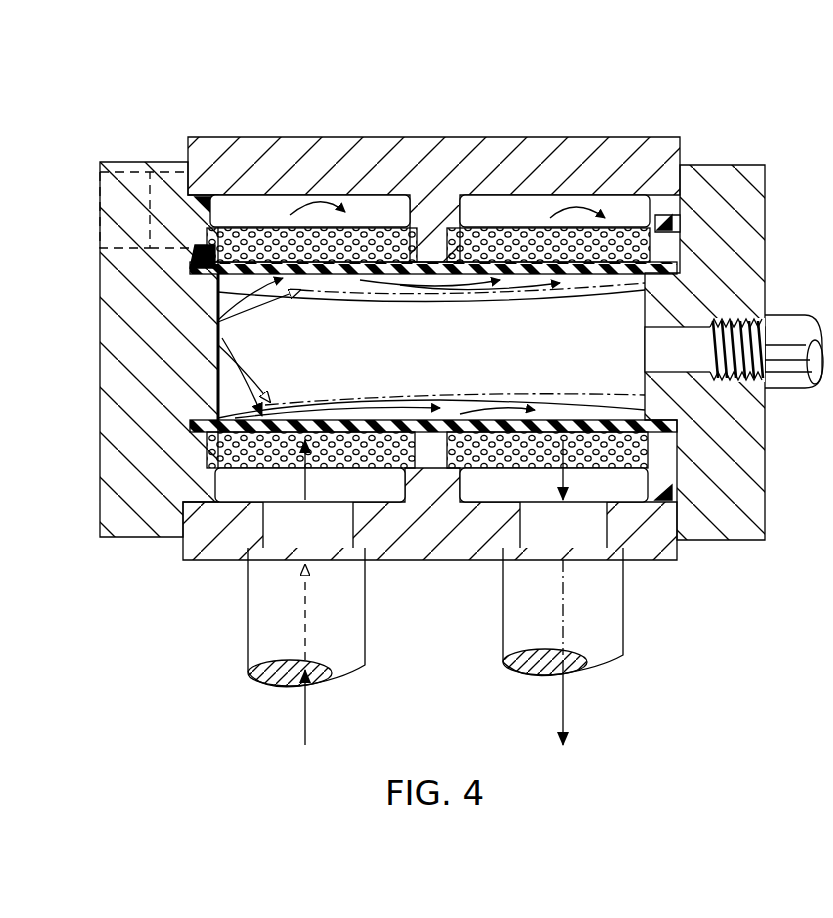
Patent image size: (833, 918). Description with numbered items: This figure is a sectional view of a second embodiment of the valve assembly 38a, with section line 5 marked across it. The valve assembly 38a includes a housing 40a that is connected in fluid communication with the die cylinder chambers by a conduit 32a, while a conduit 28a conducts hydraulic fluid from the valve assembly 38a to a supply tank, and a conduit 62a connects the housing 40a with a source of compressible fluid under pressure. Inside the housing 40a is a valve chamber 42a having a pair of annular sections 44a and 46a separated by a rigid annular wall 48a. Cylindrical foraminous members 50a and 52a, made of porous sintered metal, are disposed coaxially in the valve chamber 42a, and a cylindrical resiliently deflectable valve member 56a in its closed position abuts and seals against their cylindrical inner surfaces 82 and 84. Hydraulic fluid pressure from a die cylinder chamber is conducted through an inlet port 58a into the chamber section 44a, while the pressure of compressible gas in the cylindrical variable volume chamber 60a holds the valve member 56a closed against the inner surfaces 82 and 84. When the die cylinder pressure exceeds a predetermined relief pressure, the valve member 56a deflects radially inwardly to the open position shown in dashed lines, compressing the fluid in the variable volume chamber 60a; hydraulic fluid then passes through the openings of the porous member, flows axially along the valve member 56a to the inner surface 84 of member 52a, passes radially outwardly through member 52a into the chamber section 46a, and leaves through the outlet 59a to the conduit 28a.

The valve assembly 38a is at (685, 124).
The housing 40a is at (185, 172).
The valve chamber 42a is at (325, 193).
The valve chamber section 44a is at (398, 484).
The valve chamber section 46a is at (612, 485).
The rigid annular wall 48a is at (440, 478).
The cylindrical foraminous member 50a is at (388, 222).
The cylindrical foraminous member 52a is at (560, 195).
The valve member 56a is at (220, 322).
The inlet port 58a is at (284, 522).
The outlet 59a is at (590, 537).
The variable volume chamber 60a is at (476, 360).
The conduit 62a is at (795, 340).
The cylindrical inner surface 82 is at (328, 412).
The cylindrical inner surface 84 is at (490, 412).
The conduit 32a is at (262, 605).
The conduit 28a is at (515, 633).
The section line 5- 5 is at (578, 140).